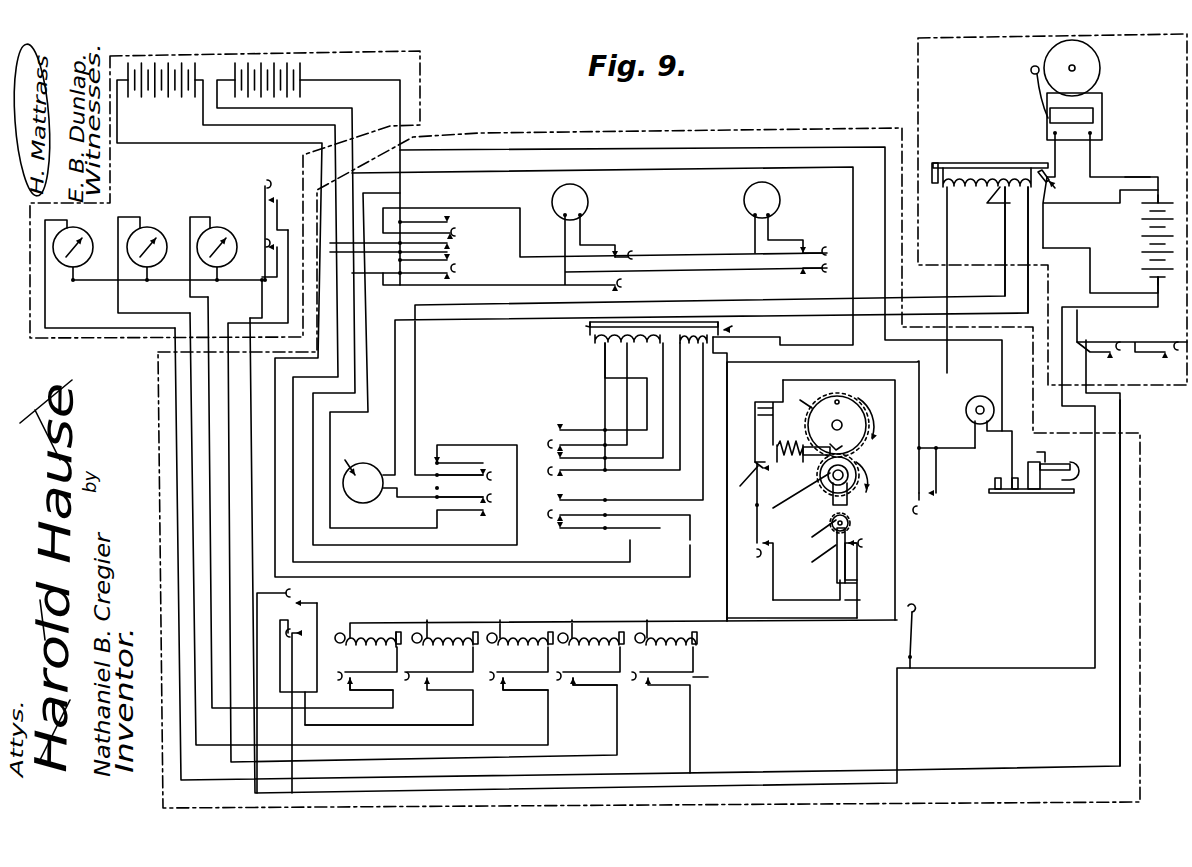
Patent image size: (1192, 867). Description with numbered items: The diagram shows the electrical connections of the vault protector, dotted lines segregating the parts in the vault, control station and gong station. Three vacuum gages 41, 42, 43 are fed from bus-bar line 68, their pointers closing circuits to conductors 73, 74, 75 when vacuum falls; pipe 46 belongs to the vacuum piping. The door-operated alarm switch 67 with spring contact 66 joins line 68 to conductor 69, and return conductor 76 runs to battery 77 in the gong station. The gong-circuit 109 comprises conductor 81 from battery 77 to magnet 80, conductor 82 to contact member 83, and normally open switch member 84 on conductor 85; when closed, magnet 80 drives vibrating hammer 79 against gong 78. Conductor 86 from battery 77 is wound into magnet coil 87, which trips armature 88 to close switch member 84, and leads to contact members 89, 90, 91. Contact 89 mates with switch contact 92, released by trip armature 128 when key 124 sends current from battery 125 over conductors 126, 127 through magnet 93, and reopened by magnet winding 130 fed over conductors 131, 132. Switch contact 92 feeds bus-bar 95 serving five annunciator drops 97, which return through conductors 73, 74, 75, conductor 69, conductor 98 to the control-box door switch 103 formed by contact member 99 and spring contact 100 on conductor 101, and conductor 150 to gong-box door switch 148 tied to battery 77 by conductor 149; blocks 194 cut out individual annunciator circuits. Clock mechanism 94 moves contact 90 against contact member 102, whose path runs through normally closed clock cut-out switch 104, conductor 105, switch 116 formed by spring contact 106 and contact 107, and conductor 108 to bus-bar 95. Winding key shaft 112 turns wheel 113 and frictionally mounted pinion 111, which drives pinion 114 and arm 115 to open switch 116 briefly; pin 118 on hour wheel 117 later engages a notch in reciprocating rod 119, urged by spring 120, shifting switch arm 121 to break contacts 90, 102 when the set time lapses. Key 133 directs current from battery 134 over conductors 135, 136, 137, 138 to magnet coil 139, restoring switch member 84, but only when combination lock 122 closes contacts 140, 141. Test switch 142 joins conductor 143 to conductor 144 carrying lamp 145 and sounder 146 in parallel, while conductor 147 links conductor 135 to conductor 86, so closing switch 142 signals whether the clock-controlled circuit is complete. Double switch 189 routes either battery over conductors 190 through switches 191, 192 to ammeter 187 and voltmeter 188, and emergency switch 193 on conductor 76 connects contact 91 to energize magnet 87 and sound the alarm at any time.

The vacuum gage 41 is at (84, 232).
The vacuum gage 42 is at (158, 230).
The vacuum gage 43 is at (230, 230).
The pipe 46 is at (722, 552).
The spring contact 66 is at (262, 190).
The alarm switch 67 is at (278, 198).
The bus-bar line 68 is at (262, 288).
The conductor 69 is at (268, 324).
The conductor 73 is at (74, 228).
The conductor 74 is at (150, 230).
The conductor 75 is at (226, 228).
The conductor 76 is at (252, 446).
The battery 77 is at (1144, 240).
The gong 78 is at (1100, 72).
The vibrating hammer 79 is at (1040, 92).
The magnet 80 is at (1094, 116).
The conductor 81 is at (1092, 160).
The conductor 82 is at (1058, 160).
The contact member 83 is at (1059, 188).
The switch member 84 is at (1040, 170).
The conductor 85 is at (1067, 244).
The conductor 86 is at (960, 248).
The magnet coil 87 is at (958, 170).
The trip armature 88 is at (990, 170).
The contact member 89 is at (733, 470).
The contact member 90 is at (746, 480).
The contact member 91 is at (905, 630).
The switch contact 92 is at (712, 326).
The magnet coil 93 is at (590, 340).
The clock mechanism 94 is at (801, 397).
The bus-bar 95 is at (560, 621).
The annunciator drops 97 is at (461, 615).
The conductor 98 is at (389, 718).
The contact member 99 is at (298, 603).
The spring contact member 100 is at (261, 691).
The conductor 101 is at (280, 711).
The contact member 102 is at (752, 461).
The switch 103 is at (311, 647).
The clock cut-out switch 104 is at (753, 531).
The conductor 105 is at (804, 606).
The spring contact member 106 is at (851, 530).
The contact member 107 is at (870, 549).
The conductor 108 is at (826, 620).
The gong-circuit 109 is at (1139, 169).
The pinion 111 is at (848, 510).
The key shaft 112 is at (801, 498).
The wheel 113 is at (850, 492).
The pinion 114 is at (815, 536).
The arm 115 is at (813, 564).
The switch 116 is at (864, 580).
The hour wheel 117 is at (857, 402).
The pin 118 is at (832, 440).
The reciprocating rod 119 is at (812, 460).
The spring 120 is at (788, 464).
The switch arm 121 is at (778, 421).
The combination lock 122 is at (374, 442).
The key 124 is at (590, 414).
The battery 125 is at (160, 104).
The conductor 126 is at (192, 158).
The conductor 127 is at (246, 131).
The trip armature 128 is at (660, 326).
The magnet winding 130 is at (691, 345).
The conductor 131 is at (654, 470).
The conductor 132 is at (674, 521).
The key 133 is at (475, 481).
The battery 134 is at (300, 82).
The conductor 135 is at (320, 118).
The conductor 136 is at (378, 95).
The conductor 137 is at (382, 422).
The conductor 138 is at (444, 422).
The magnet coil 139 is at (975, 212).
The contact 140 is at (345, 461).
The contact 141 is at (386, 516).
The test switch 142 is at (940, 496).
The conductor 143 is at (934, 432).
The conductor 144 is at (668, 142).
The lamp 145 is at (946, 398).
The sounder 146 is at (1036, 501).
The conductor 147 is at (694, 181).
The switch 148 is at (1144, 325).
The conductor 149 is at (1080, 318).
The conductor 150 is at (1016, 752).
The ammeter 187 is at (588, 197).
The voltmeter 188 is at (780, 195).
The double switch 189 is at (455, 240).
The pair of conductors 190 is at (534, 271).
The switch 191 is at (640, 248).
The switch 192 is at (812, 246).
The emergency switch 193 is at (920, 615).
The keys or blocks 194 is at (716, 674).